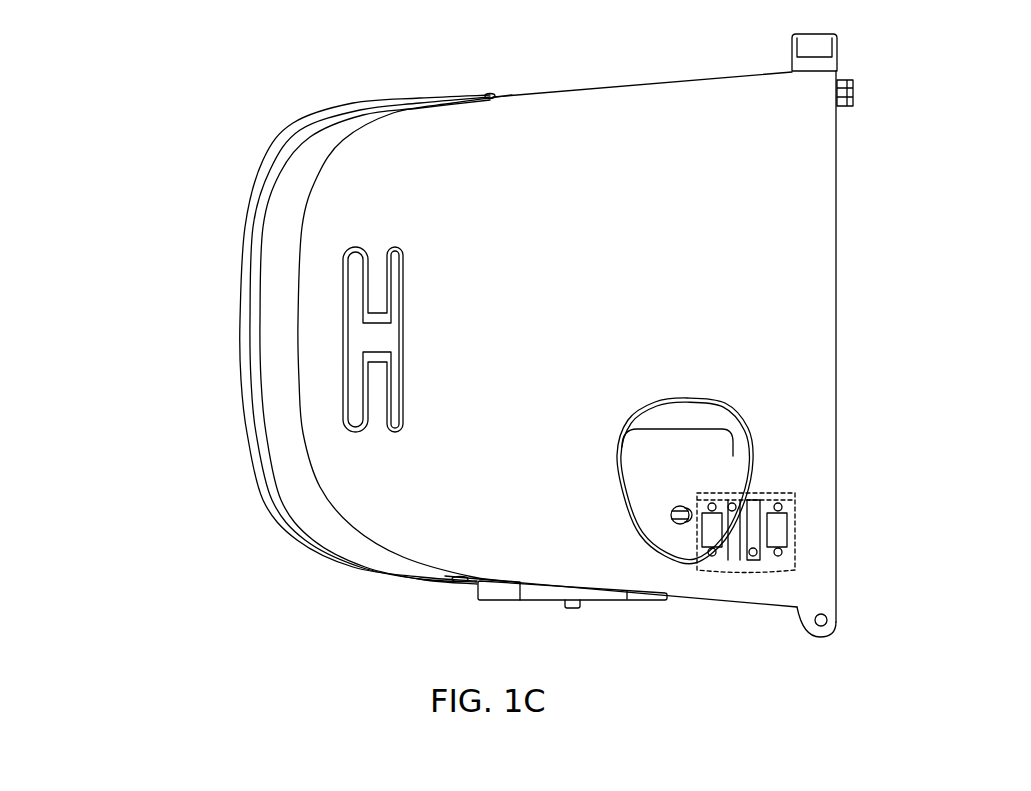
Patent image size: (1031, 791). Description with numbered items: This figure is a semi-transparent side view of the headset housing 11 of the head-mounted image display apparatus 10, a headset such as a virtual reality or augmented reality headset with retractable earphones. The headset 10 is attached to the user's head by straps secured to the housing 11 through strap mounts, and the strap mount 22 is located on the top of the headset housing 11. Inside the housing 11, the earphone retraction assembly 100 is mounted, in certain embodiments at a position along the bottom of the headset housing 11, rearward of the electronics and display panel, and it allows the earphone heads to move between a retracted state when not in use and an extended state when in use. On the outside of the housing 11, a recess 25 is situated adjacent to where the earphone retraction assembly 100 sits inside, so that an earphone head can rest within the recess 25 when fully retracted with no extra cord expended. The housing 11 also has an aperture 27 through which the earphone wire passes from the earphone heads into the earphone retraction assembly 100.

The head-mounted image display apparatus 10 is at (588, 346).
The headset housing 11 is at (787, 288).
The strap mount 22 is at (362, 378).
The recess 25 is at (722, 455).
The aperture 27 is at (680, 524).
The earphone retraction assembly 100 is at (782, 498).